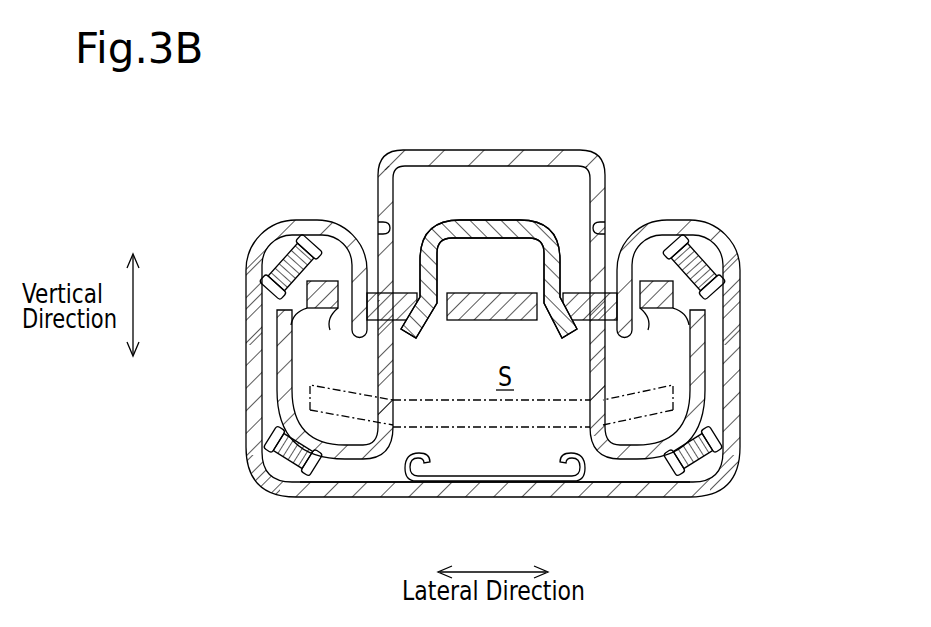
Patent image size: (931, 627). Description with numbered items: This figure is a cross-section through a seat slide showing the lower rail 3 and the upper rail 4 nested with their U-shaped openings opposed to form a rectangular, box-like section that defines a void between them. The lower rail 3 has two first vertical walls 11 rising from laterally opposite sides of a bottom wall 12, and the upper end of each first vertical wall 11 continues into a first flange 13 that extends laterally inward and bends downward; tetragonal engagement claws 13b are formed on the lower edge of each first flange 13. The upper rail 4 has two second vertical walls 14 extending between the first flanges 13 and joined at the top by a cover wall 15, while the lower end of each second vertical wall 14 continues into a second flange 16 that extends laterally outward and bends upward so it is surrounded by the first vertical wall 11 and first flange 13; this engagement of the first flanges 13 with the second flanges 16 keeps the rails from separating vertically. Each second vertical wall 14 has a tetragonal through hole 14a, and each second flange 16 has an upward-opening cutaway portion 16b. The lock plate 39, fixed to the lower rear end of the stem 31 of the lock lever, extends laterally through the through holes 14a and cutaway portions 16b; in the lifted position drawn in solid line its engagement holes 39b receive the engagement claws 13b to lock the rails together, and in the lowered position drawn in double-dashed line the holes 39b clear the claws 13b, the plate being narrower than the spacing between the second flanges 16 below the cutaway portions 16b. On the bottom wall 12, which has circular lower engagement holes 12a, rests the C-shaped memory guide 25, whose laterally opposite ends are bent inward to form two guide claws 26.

The lower rail 3 is at (542, 503).
The upper rail 4 is at (494, 145).
The first vertical wall 11 is at (245, 349).
The bottom wall 12 is at (625, 498).
The lower engagement hole 12a is at (473, 497).
The first flange 13 is at (321, 219).
The engagement claw 13b is at (355, 340).
The second vertical wall 14 is at (374, 190).
The through hole 14a is at (380, 230).
The cover wall 15 is at (550, 148).
The second flange 16 is at (262, 302).
The cutaway portion 16b is at (262, 320).
The memory guide 25 is at (398, 483).
The guide claw 26 is at (422, 484).
The stem 31 is at (497, 226).
The lock plate 39 is at (468, 322).
The engagement hole 39b is at (314, 310).